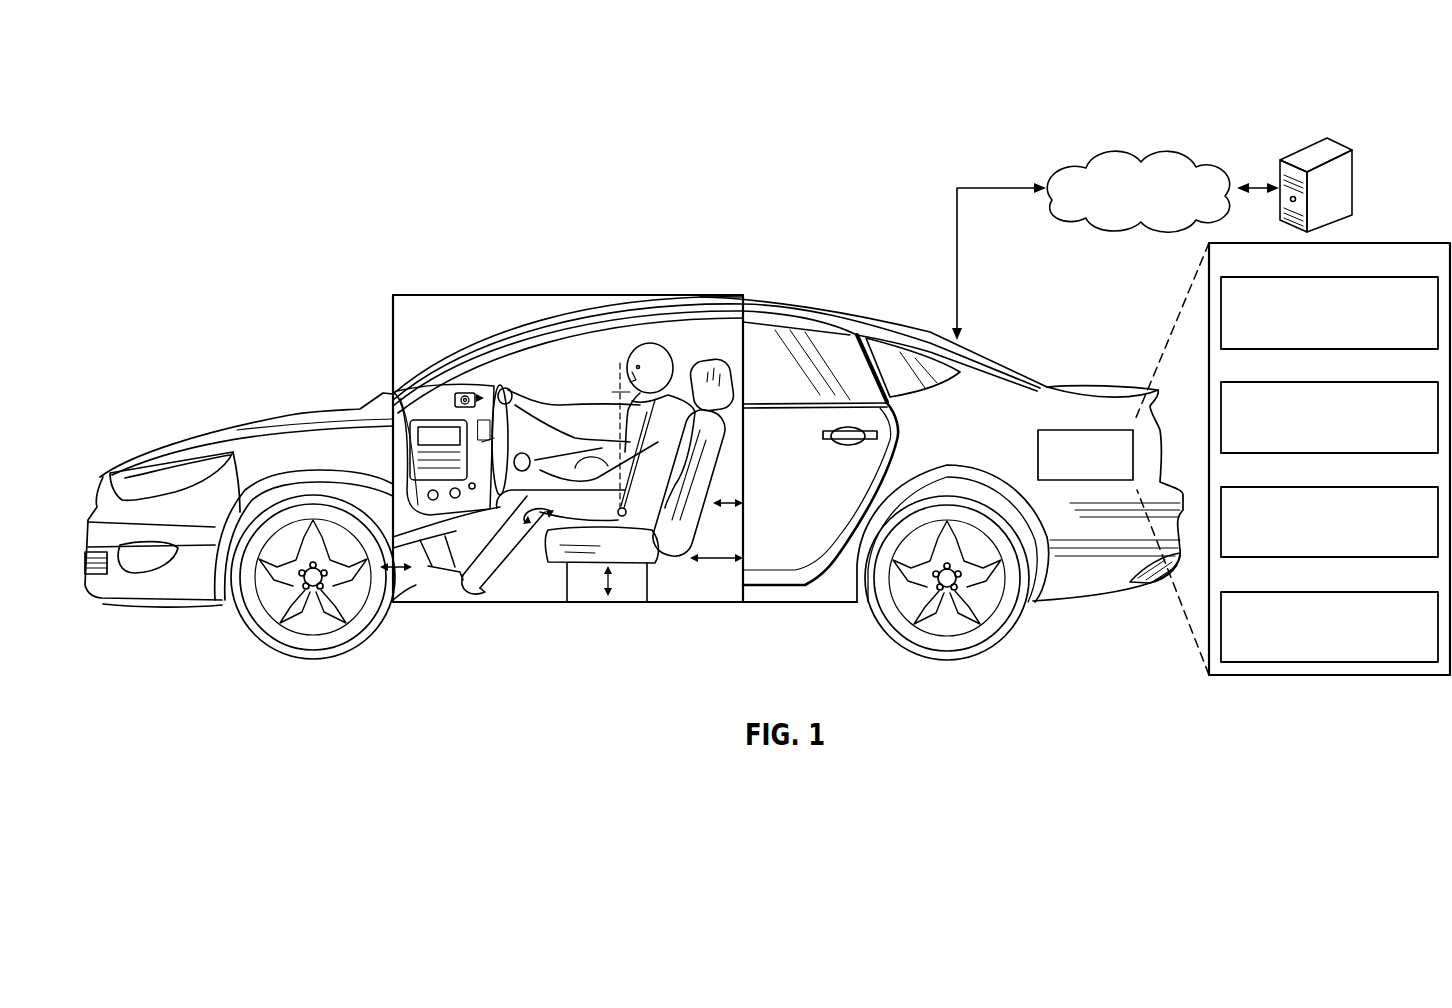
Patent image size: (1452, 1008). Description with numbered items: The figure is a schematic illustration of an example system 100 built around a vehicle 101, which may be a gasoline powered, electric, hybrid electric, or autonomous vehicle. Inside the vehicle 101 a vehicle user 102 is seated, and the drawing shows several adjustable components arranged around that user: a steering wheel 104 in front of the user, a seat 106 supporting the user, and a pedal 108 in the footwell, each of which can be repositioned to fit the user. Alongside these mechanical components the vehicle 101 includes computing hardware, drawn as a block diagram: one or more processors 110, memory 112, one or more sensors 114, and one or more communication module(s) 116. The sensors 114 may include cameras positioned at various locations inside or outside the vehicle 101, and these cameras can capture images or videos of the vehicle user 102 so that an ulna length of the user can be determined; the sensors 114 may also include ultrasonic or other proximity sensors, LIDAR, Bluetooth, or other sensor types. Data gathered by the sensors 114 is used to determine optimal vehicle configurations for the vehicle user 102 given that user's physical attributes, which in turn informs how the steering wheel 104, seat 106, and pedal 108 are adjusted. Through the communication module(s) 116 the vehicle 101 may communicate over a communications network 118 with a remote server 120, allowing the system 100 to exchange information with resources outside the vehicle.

The system 100 is at (197, 112).
The vehicle 101 is at (376, 366).
The vehicle user 102 is at (657, 343).
The steering wheel 104 is at (494, 392).
The seat 106 is at (722, 358).
The pedal 108 is at (414, 603).
The processors 110 is at (1285, 276).
The memory 112 is at (1285, 381).
The sensors 114 is at (1285, 486).
The communication module(s) 116 is at (1285, 591).
The communications network 118 is at (1089, 160).
The remote server 120 is at (1301, 150).